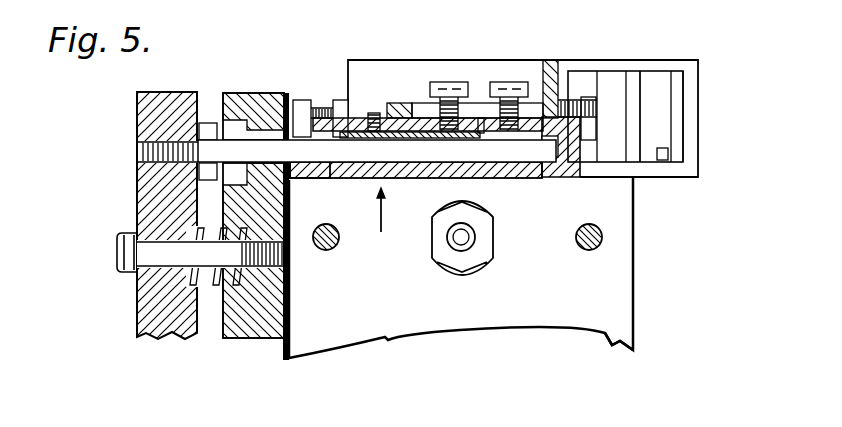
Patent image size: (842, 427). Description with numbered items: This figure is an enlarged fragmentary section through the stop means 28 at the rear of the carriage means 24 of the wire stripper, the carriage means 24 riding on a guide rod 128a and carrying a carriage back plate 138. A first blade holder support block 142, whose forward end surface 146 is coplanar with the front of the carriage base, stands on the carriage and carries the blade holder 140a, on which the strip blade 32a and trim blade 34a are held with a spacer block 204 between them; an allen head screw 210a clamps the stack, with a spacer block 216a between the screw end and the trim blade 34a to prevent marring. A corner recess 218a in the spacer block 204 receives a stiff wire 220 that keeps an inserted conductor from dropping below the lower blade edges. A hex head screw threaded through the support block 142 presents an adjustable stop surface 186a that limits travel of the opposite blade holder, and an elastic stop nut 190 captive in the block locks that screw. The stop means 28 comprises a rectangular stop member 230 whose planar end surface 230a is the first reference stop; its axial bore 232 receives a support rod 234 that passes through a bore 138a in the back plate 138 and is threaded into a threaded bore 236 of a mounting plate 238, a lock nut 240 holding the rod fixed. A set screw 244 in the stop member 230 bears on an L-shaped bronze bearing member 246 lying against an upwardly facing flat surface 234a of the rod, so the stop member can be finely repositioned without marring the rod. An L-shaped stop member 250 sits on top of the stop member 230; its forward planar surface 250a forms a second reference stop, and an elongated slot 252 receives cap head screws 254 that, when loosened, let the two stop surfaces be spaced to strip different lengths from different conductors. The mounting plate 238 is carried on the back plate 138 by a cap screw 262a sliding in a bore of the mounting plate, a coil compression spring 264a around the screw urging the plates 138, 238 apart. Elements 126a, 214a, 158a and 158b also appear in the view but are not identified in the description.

The carriage means 24 is at (244, 8).
The bearing rod 128a is at (307, 11).
The blade holder 140a is at (413, 60).
The L-shaped stop member 250 is at (388, 100).
The L-shaped bronze bearing member 246 is at (445, 142).
The forwardly facing planar surface 250a is at (560, 62).
The trim blade 34a is at (632, 80).
The frame member 126a is at (687, 6).
The threaded stud 214a is at (340, 100).
The cap head screws 254 is at (437, 83).
The spacer block 216a is at (607, 83).
The spacer block 204 is at (655, 87).
The allen head screw 210a is at (328, 100).
The lock nut 240 is at (212, 124).
The bore 138a is at (263, 130).
The set screw 244 is at (373, 112).
The elongated slot 252 is at (413, 105).
The strip blade 32a is at (677, 100).
The corner recess 218a is at (668, 152).
The mounting plate 238 is at (148, 106).
The threaded bore 236 is at (140, 148).
The flat surface 234a is at (323, 158).
The axial bore 232 is at (407, 209).
The support rod 234 is at (296, 178).
The stop member 230 is at (520, 180).
The planar end surface 230a is at (596, 168).
The stiff wire 220 is at (667, 180).
The stop means 28 is at (384, 222).
The mounting pin 158b is at (326, 251).
The elastic stop nut 190 is at (437, 243).
The stop surface 186a is at (468, 240).
The mounting pin 158a is at (590, 251).
The forward end surface 146 is at (637, 296).
The cap screw 262a is at (117, 277).
The coil compression spring 264a is at (210, 318).
The carriage back plate 138 is at (267, 350).
The first blade holder support block 142 is at (600, 340).